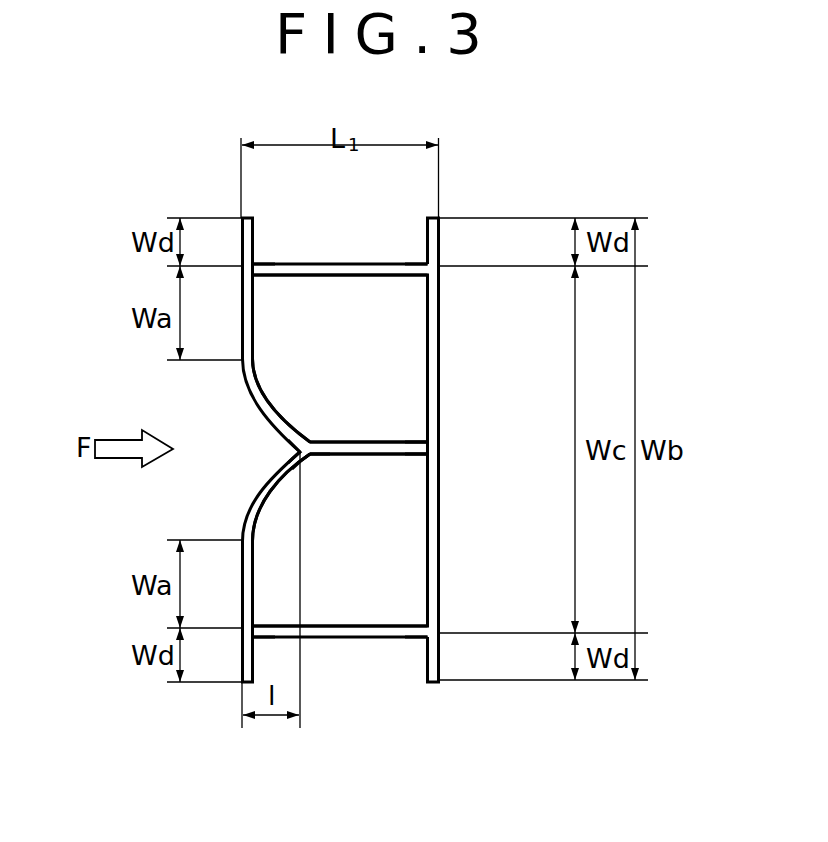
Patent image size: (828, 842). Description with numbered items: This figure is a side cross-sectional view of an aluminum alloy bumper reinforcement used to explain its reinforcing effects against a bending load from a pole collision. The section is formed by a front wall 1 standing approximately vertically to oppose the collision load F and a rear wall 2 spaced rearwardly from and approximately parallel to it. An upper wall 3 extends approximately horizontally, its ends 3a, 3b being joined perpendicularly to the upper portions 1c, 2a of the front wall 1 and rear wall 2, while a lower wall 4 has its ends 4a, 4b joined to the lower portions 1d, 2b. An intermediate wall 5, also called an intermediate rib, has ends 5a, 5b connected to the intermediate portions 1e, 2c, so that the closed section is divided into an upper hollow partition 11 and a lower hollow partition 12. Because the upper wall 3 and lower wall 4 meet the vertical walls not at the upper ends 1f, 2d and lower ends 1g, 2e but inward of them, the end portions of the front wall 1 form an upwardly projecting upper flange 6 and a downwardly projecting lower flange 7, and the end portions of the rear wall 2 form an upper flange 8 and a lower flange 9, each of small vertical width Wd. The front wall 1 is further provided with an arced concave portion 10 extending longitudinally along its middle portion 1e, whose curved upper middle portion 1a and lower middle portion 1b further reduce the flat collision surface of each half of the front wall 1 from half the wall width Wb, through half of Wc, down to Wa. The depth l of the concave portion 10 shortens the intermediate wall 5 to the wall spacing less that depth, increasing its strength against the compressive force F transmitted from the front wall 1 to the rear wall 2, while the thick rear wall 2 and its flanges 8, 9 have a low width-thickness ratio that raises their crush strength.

The front wall 1 is at (241, 333).
The upper middle portion 1a is at (256, 405).
The lower middle portion 1b is at (266, 486).
The upper portion of front wall 1c is at (253, 266).
The lower portion of front wall 1d is at (250, 627).
The intermediate portion of front wall 1e is at (305, 460).
The upper end of front wall 1f is at (242, 215).
The lower end of front wall 1g is at (242, 681).
The rear wall 2 is at (440, 367).
The upper portion of rear wall 2a is at (432, 270).
The lower portion of rear wall 2b is at (440, 627).
The intermediate portion of rear wall 2c is at (438, 445).
The upper end of rear wall 2d is at (441, 222).
The lower end of rear wall 2e is at (440, 682).
The upper wall 3 is at (340, 262).
The end of upper wall 3a is at (256, 262).
The end of upper wall 3b is at (425, 258).
The lower wall 4 is at (360, 640).
The end of lower wall 4a is at (256, 640).
The end of lower wall 4b is at (425, 640).
The intermediate wall 5 is at (370, 441).
The end of intermediate wall 5a is at (312, 456).
The end of intermediate wall 5b is at (428, 451).
The upper flange 6 is at (241, 243).
The lower flange 7 is at (240, 660).
The upper flange 8 is at (432, 247).
The lower flange 9 is at (440, 660).
The concave portion 10 is at (272, 453).
The upper hollow partition 11 is at (370, 330).
The lower hollow partition 12 is at (373, 558).